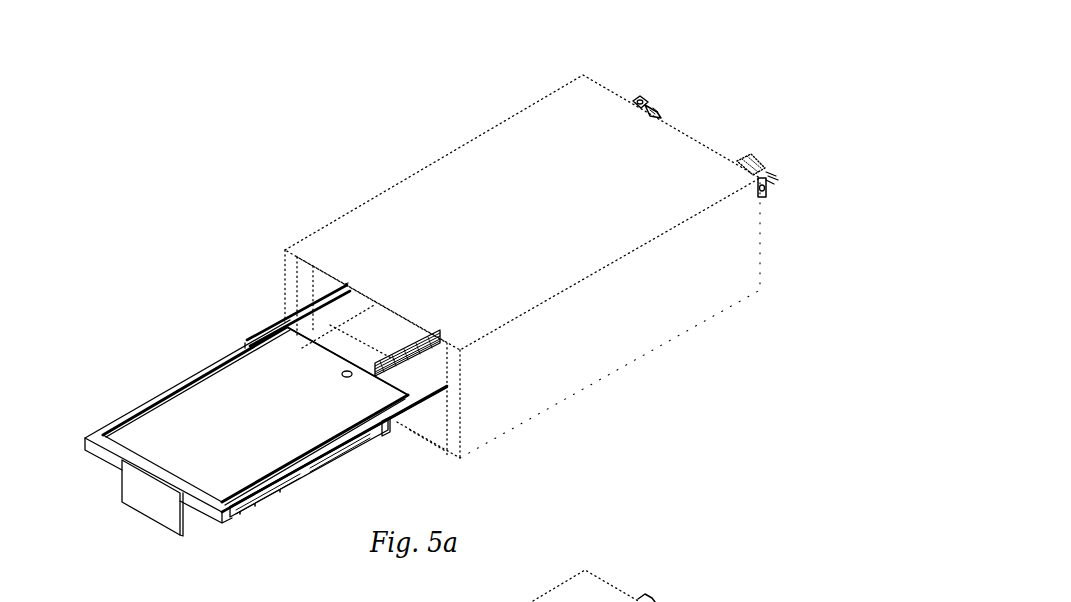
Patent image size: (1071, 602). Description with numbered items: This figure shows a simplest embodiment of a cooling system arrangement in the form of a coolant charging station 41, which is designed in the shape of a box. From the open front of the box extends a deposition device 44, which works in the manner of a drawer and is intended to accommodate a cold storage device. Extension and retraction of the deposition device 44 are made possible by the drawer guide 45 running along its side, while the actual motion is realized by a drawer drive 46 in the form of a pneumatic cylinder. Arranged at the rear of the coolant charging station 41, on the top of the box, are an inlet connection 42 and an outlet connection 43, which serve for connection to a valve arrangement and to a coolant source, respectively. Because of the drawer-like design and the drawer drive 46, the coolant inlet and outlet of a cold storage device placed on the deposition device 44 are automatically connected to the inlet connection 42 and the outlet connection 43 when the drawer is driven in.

The coolant charging station 41 is at (184, 107).
The inlet connection 42 is at (760, 166).
The outlet connection 43 is at (649, 100).
The deposition device 44 is at (203, 406).
The drawer guide 45 is at (265, 497).
The drawer drive 46 is at (413, 350).